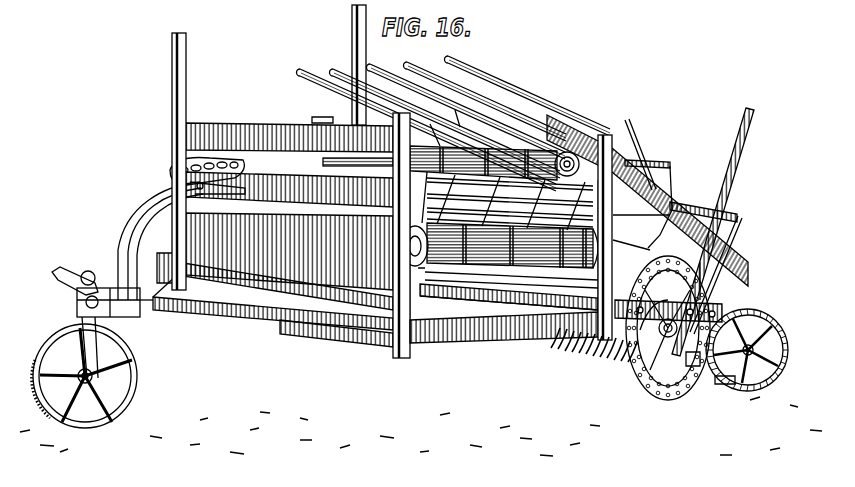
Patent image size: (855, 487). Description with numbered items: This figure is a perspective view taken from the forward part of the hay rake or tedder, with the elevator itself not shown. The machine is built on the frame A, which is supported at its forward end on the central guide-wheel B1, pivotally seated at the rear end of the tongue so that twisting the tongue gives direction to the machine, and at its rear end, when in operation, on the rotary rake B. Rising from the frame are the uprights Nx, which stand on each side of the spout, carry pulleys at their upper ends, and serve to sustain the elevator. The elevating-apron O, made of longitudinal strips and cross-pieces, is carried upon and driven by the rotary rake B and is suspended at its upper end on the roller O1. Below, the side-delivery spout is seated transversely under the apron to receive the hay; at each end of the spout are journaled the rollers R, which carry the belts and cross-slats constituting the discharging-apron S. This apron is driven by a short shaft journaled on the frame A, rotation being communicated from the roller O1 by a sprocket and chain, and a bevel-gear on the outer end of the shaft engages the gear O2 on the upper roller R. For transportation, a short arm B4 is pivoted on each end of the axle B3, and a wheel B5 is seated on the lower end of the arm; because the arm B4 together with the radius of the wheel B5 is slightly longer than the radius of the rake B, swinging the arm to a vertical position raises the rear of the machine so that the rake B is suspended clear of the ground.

The uprights Nx is at (269, 147).
The gear O2 is at (528, 94).
The elevating-apron O is at (500, 143).
The roller O1 is at (520, 150).
The rollers R is at (500, 245).
The frame A is at (395, 353).
The discharging-apron S is at (448, 326).
The rotary rake B is at (641, 392).
The axle B3 is at (693, 366).
The short arm B4 is at (727, 384).
The wheel B5 is at (777, 326).
The central guide-wheel B1 is at (143, 360).